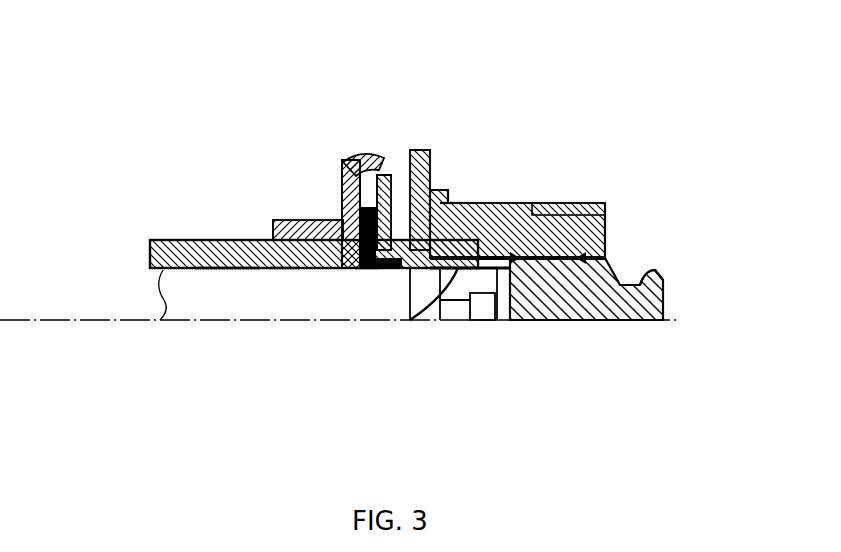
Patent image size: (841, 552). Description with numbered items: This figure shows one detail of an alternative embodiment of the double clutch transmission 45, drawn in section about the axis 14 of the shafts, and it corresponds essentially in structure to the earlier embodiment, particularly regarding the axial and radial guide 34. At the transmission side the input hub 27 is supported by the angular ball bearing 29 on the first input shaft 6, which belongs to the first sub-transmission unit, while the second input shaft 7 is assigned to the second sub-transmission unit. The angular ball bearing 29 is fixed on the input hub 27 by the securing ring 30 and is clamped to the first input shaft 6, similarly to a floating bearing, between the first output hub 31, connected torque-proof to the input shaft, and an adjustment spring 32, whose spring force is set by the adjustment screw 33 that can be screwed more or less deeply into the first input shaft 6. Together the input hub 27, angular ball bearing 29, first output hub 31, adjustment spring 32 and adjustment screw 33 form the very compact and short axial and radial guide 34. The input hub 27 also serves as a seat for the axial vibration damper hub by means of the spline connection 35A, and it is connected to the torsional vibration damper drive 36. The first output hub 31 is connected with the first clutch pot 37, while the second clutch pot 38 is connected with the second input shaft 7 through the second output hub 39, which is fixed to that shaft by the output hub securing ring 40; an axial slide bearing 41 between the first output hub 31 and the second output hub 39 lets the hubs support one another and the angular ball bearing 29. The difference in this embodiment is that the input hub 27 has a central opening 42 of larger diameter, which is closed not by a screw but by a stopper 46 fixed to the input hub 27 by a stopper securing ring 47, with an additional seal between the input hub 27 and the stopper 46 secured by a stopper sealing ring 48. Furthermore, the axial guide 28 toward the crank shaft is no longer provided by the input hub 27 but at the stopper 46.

The first input shaft 6 is at (228, 300).
The second input shaft 7 is at (185, 268).
The axis 14 is at (74, 322).
The input hub 27 is at (487, 203).
The axial guide 28 is at (658, 262).
The angular ball bearing 29 is at (410, 322).
The securing ring 30 is at (450, 203).
The first output hub 31 is at (387, 268).
The adjustment spring 32 is at (432, 320).
The adjustment screw 33 is at (470, 320).
The axial and radial guide 34 is at (362, 388).
The spline connection 35A is at (553, 203).
The torsional vibration damper drive 36 is at (420, 150).
The first clutch pot 37 is at (383, 175).
The second clutch pot 38 is at (352, 160).
The second output hub 39 is at (283, 268).
The output hub securing ring 40 is at (338, 268).
The axial slide bearing 41 is at (370, 268).
The central opening 42 is at (540, 320).
The double clutch transmission 45 is at (714, 84).
The stopper 46 is at (585, 320).
The stopper securing ring 47 is at (625, 320).
The stopper sealing ring 48 is at (590, 215).